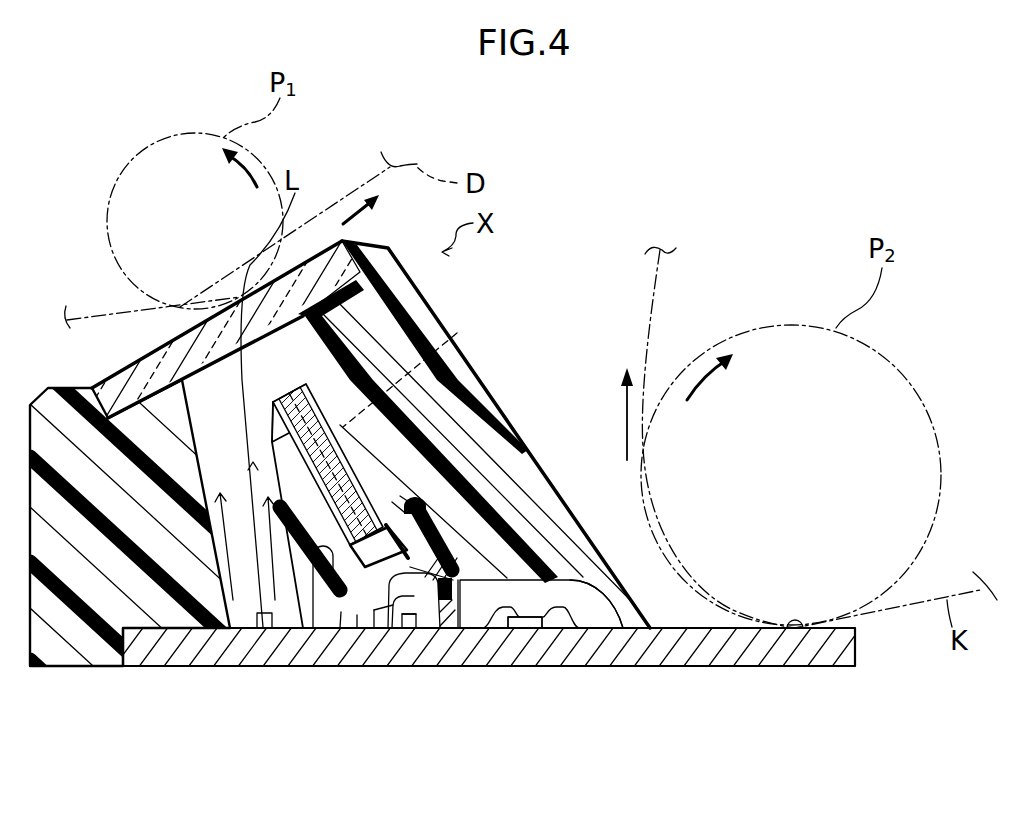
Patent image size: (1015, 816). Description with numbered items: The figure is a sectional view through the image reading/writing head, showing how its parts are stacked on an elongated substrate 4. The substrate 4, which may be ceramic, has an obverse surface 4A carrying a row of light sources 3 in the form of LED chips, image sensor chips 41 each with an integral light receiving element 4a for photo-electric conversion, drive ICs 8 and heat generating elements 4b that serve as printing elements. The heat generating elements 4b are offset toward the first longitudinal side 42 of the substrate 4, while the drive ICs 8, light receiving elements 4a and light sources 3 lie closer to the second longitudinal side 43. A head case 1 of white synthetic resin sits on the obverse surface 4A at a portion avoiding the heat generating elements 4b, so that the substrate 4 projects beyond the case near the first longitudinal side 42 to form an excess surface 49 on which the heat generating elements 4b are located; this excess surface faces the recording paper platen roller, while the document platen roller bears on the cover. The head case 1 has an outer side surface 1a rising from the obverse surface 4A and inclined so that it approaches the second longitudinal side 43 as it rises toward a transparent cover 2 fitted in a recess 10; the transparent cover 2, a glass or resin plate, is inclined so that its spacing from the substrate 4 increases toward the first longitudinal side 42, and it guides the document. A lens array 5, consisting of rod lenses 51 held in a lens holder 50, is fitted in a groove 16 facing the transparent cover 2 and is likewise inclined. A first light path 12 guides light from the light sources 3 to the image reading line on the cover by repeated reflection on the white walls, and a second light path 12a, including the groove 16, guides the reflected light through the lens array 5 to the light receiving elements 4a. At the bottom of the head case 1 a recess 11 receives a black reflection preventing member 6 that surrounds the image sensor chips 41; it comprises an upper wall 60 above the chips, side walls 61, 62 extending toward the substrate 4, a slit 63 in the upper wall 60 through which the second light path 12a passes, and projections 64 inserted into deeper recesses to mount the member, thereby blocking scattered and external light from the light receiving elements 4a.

The head case 1 is at (443, 322).
The outer side surface 1a is at (405, 500).
The transparent cover 2 is at (118, 390).
The light sources 3 is at (264, 628).
The substrate 4 is at (507, 667).
The light receiving element 4a is at (408, 630).
The obverse surface 4A is at (580, 627).
The heat generating elements 4b is at (795, 628).
The lens array 5 is at (307, 380).
The reflection preventing member 6 is at (463, 591).
The drive ICs 8 is at (531, 630).
The recess 10 is at (97, 388).
The recess 11 is at (370, 612).
The first light path 12 is at (240, 453).
The second light path 12a is at (393, 505).
The groove 16 is at (457, 333).
The image sensor chips 41 is at (413, 630).
The first longitudinal side 42 is at (857, 652).
The second longitudinal side 43 is at (178, 652).
The excess surface 49 is at (686, 628).
The lens holder 50 is at (271, 396).
The rod lenses 51 is at (195, 223).
The upper wall 60 is at (415, 630).
The side wall 61 is at (348, 612).
The side wall 62 is at (452, 628).
The slit 63 is at (391, 617).
The projections 64 is at (397, 547).